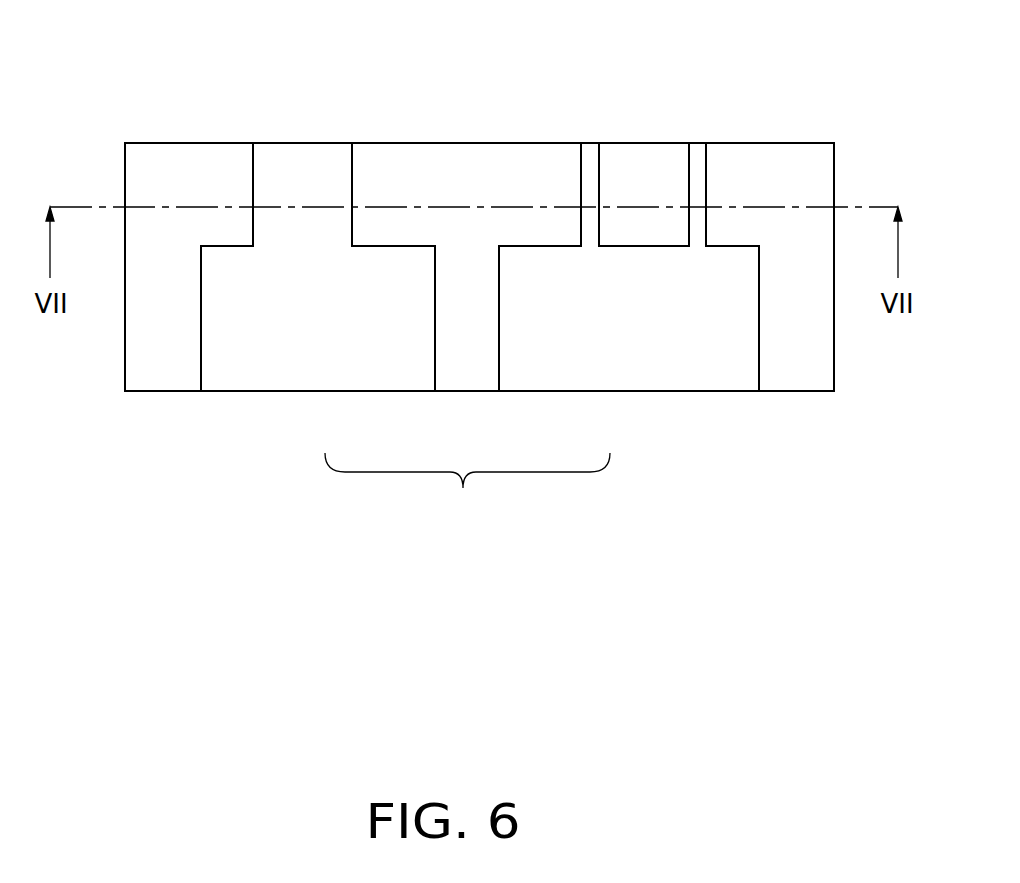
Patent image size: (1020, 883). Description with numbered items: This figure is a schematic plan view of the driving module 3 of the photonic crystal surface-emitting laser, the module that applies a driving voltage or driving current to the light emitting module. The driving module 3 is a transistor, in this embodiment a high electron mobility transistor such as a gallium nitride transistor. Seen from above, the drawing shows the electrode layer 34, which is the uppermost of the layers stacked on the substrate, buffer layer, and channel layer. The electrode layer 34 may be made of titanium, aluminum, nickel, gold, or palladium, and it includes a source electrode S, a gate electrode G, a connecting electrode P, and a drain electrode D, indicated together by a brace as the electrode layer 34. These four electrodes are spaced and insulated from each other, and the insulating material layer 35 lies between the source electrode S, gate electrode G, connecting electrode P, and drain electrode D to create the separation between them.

The driving module 3 is at (528, 42).
The insulating material layer 35 is at (298, 173).
The electrode layer 34 is at (467, 493).
The source electrode S is at (165, 364).
The gate electrode G is at (475, 368).
The connecting electrode P is at (645, 217).
The drain electrode D is at (802, 367).